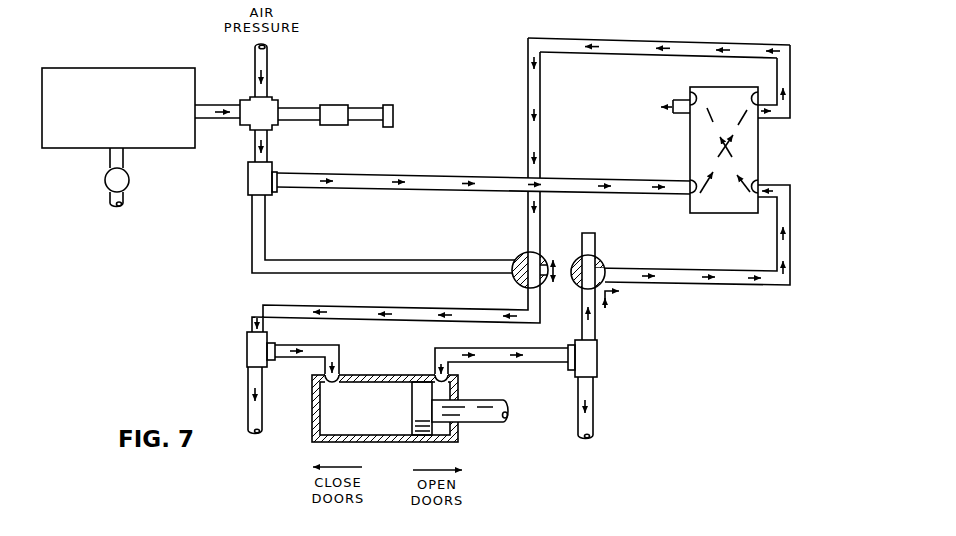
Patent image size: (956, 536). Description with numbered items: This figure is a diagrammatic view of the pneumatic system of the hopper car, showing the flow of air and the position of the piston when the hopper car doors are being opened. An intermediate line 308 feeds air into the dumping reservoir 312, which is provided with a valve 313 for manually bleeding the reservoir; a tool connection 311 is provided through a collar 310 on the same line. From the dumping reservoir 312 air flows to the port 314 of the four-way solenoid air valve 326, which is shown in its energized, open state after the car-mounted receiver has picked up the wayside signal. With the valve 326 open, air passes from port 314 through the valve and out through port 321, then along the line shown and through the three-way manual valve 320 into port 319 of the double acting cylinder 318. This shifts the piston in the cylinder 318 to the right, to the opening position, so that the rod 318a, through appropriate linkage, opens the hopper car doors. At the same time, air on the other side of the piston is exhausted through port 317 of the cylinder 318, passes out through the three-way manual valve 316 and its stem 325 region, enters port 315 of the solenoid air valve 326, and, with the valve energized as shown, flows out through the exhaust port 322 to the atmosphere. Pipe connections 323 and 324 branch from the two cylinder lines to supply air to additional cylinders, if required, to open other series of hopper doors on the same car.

The intermediate line 308 is at (268, 66).
The collar 310 is at (335, 105).
The tool connection 311 is at (393, 115).
The dumping reservoir 312 is at (123, 68).
The valve 313 is at (130, 180).
The port 314 is at (690, 180).
The port 315 is at (760, 181).
The three-way manual valve 316 is at (603, 262).
The port 317 is at (446, 392).
The double acting cylinder 318 is at (312, 425).
The rod 318a is at (483, 423).
The port 319 is at (342, 380).
The three-way manual valve 320 is at (518, 258).
The port 321 is at (760, 97).
The exhaust port 322 is at (688, 98).
The pipe connection 323 is at (250, 413).
The pipe connection 324 is at (592, 428).
The valve stem 325 is at (588, 232).
The four-way solenoid air valve 326 is at (737, 213).